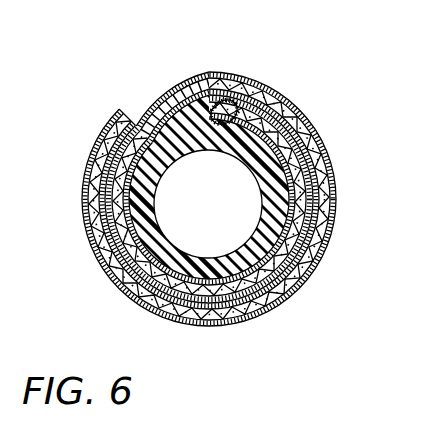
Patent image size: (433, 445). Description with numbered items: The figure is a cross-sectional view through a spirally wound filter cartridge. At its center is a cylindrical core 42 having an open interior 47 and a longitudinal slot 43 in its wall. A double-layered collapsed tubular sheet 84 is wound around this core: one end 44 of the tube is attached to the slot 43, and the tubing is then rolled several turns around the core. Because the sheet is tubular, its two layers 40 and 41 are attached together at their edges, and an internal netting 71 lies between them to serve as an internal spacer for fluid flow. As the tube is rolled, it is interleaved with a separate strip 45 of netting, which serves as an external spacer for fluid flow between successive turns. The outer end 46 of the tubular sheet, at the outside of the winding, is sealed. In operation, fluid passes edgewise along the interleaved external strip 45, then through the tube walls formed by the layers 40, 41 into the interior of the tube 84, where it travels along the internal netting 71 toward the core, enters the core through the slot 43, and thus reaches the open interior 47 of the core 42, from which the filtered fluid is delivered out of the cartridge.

The layer 40 is at (92, 150).
The layer 41 is at (318, 203).
The cylindrical core 42 is at (265, 204).
The longitudinal slot 43 is at (208, 103).
The end of the tube 44 is at (246, 92).
The strip of netting 45 is at (318, 160).
The outer end of the tubular sheet 46 is at (139, 112).
The open interior 47 is at (200, 201).
The internal netting 71 is at (300, 237).
The double-layered tubular sheet 84 is at (318, 122).